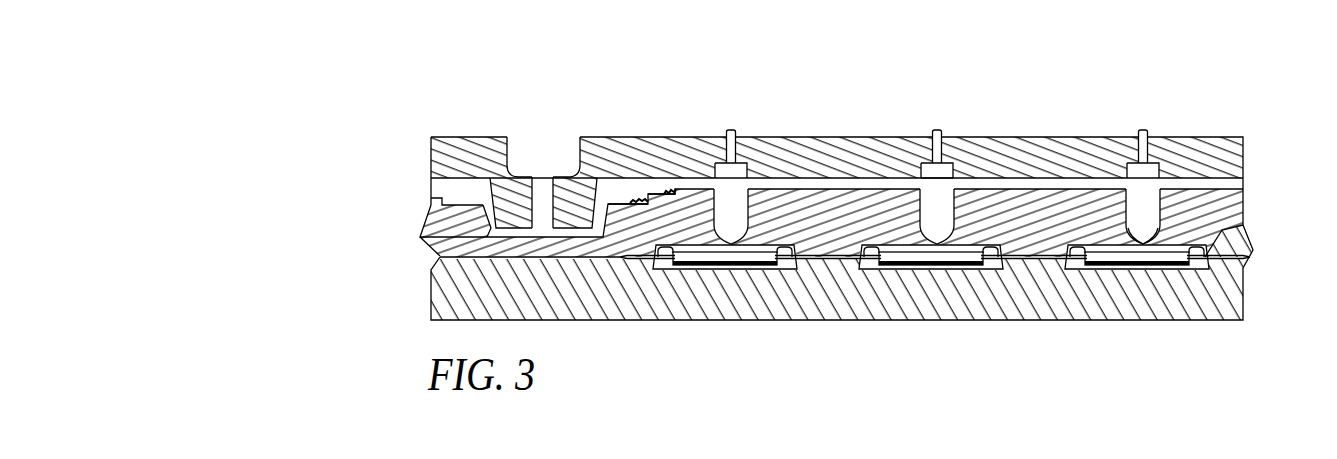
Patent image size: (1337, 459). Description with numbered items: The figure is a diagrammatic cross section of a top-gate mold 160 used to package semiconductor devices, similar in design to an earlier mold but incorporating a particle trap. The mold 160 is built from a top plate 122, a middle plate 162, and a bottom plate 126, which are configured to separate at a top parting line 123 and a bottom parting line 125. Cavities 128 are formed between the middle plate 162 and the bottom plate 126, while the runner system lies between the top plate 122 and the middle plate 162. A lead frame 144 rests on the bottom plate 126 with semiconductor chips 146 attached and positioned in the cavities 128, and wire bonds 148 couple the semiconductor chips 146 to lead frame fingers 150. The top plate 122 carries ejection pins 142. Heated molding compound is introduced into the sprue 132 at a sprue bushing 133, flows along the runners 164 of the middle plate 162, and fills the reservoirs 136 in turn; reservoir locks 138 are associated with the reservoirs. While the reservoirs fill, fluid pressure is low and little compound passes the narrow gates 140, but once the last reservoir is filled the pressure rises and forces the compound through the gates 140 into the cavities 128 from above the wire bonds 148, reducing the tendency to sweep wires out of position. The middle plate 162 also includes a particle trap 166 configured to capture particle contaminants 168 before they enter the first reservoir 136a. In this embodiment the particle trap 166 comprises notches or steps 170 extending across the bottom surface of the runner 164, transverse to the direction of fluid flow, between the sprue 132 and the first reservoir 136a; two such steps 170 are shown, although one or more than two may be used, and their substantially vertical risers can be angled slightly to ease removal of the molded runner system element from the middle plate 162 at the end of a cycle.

The top plate 122 is at (437, 155).
The top parting line 123 is at (431, 178).
The bottom parting line 125 is at (440, 257).
The bottom plate 126 is at (465, 300).
The cavities 128 is at (662, 269).
The sprue 132 is at (557, 195).
The sprue bushing 133 is at (538, 185).
The reservoirs 136 is at (1133, 210).
The first reservoir 136a is at (736, 200).
The reservoir locks 138 is at (950, 167).
The gates 140 is at (1143, 240).
The ejection pins 142 is at (944, 130).
The lead frame 144 is at (830, 259).
The semiconductor chips 146 is at (945, 269).
The wire bonds 148 is at (1230, 227).
The lead frame fingers 150 is at (1197, 252).
The mold 160 is at (1078, 63).
The middle plate 162 is at (424, 233).
The runners 164 is at (1036, 180).
The particle trap 166 is at (642, 187).
The particle contaminants 168 is at (675, 181).
The step 170 is at (652, 195).